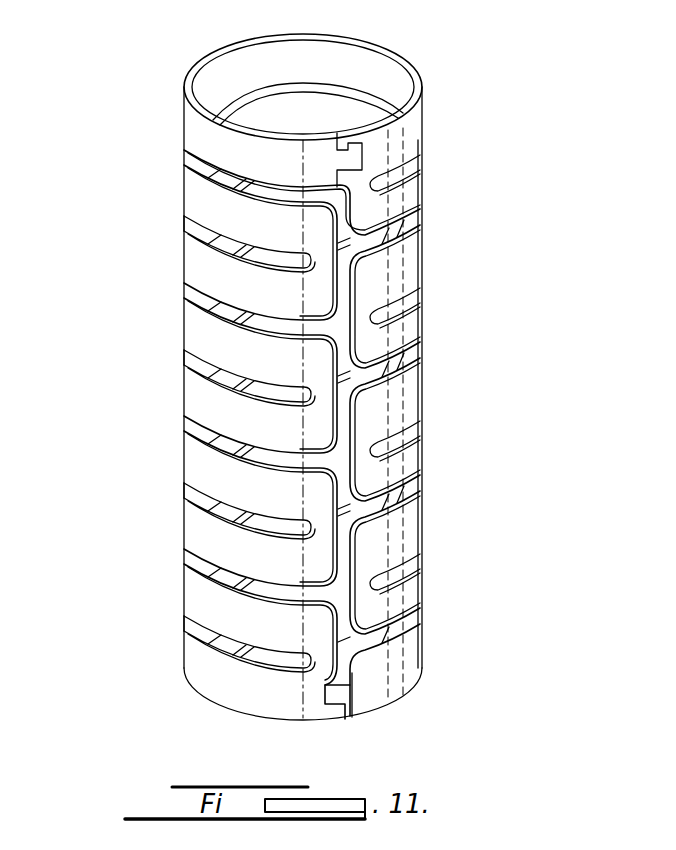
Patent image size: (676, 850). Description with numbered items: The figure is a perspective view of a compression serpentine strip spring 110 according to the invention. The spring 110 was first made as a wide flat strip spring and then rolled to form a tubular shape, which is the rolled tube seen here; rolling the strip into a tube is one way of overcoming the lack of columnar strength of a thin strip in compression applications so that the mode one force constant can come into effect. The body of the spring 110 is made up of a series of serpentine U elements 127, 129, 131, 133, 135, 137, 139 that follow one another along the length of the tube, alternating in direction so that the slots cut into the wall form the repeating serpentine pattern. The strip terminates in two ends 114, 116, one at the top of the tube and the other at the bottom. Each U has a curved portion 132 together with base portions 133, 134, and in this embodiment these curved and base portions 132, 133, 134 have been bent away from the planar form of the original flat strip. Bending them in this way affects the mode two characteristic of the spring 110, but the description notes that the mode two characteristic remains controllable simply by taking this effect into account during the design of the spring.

The spring 110 is at (515, 98).
The end 114 is at (340, 135).
The end 116 is at (344, 708).
The serpentine U element 127 is at (174, 228).
The serpentine U element 129 is at (174, 359).
The serpentine U element 131 is at (174, 492).
The curved portion of the U 132 is at (405, 265).
The serpentine U element / base portion of the U 133 is at (300, 243).
The base portion of the U 134 is at (296, 297).
The serpentine U element 135 is at (440, 289).
The serpentine U element 137 is at (438, 431).
The serpentine U element 139 is at (437, 567).